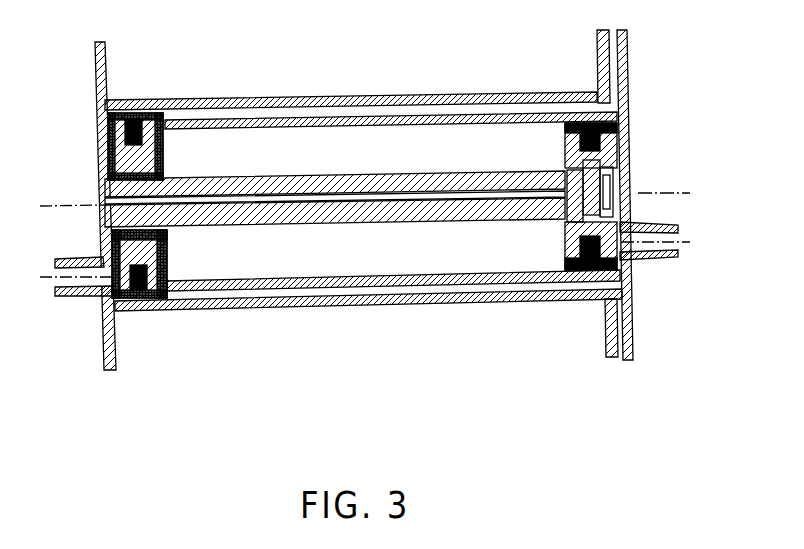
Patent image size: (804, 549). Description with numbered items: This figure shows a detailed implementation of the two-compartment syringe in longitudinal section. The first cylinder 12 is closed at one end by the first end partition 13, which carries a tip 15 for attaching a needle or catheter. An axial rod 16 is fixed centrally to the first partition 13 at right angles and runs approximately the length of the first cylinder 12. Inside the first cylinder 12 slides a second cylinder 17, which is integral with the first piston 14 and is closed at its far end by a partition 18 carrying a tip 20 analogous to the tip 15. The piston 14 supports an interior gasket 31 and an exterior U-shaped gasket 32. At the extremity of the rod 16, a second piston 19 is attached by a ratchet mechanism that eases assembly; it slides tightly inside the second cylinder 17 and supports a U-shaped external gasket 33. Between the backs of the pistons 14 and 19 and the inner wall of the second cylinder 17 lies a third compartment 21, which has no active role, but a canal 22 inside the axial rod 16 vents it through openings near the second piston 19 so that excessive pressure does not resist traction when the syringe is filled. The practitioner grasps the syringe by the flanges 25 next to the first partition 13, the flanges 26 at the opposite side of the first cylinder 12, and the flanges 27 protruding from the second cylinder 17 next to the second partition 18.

The first cylinder 12 is at (265, 97).
The first end partition 13 is at (97, 137).
The first piston 14 is at (153, 130).
The tip 15 is at (80, 298).
The axial rod 16 is at (305, 216).
The second cylinder 17 is at (350, 107).
The partition 18 is at (628, 164).
The piston 19 is at (563, 150).
The tip 20 is at (659, 262).
The third compartment 21 is at (457, 253).
The canal 22 is at (390, 201).
The flanges 25 is at (106, 63).
The flanges 26 is at (597, 62).
The flanges 27 is at (628, 71).
The interior gasket 31 is at (97, 184).
The exterior U-shaped gasket 32 is at (140, 299).
The gasket 33 is at (590, 271).